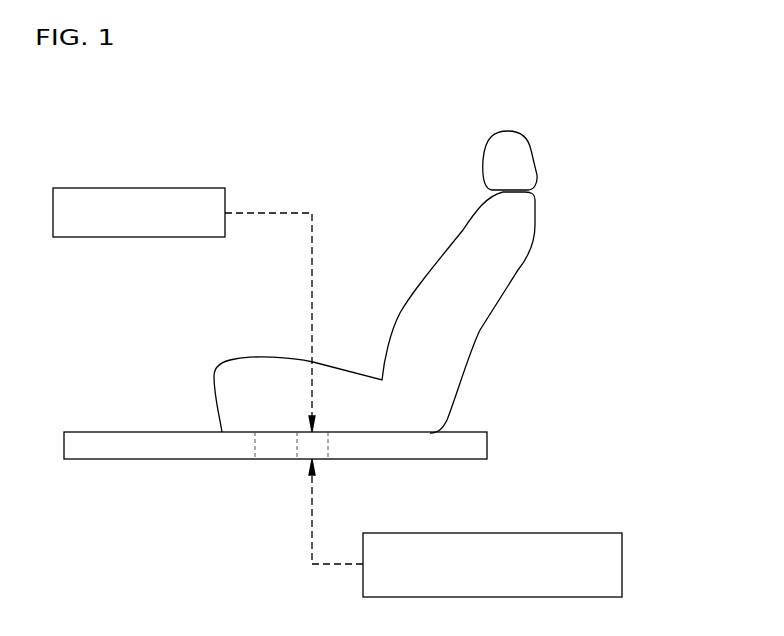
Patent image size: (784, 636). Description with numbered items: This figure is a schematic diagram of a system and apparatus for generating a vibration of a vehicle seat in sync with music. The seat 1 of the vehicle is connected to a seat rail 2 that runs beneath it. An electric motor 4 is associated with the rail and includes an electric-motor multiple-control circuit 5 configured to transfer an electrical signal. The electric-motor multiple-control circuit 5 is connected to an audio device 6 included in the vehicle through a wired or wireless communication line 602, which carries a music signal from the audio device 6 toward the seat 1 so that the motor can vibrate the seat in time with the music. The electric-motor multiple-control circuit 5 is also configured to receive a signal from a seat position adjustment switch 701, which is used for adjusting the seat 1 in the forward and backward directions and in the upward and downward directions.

The seat 1 is at (487, 298).
The seat rail 2 is at (121, 450).
The electric motor 4 is at (268, 450).
The electric-motor multiple-control circuit 5 is at (307, 450).
The audio device 6 is at (138, 188).
The wired or wireless communication line 602 is at (312, 300).
The seat position adjustment switch 701 is at (622, 566).